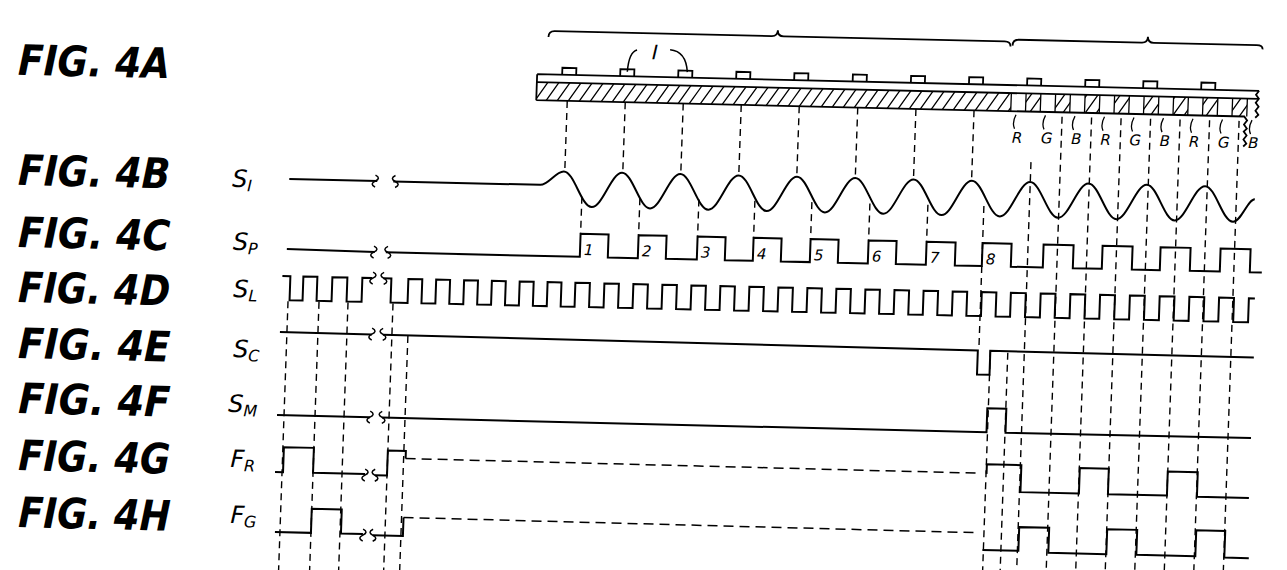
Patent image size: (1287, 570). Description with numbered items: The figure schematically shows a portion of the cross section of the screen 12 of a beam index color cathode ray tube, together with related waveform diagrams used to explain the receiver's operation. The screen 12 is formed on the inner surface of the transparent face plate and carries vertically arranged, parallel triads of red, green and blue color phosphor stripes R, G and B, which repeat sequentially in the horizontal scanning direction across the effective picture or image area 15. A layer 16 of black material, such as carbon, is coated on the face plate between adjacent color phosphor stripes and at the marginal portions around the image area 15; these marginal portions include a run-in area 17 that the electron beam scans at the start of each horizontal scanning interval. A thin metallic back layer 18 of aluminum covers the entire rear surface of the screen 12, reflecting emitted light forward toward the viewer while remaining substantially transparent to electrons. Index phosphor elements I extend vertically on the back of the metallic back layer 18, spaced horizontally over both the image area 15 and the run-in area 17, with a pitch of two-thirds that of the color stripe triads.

The screen 12 is at (1247, 64).
The image area 15 is at (1137, 62).
The black material layer 16 is at (936, 92).
The run-in area 17 is at (779, 24).
The metallic back layer 18 is at (768, 67).